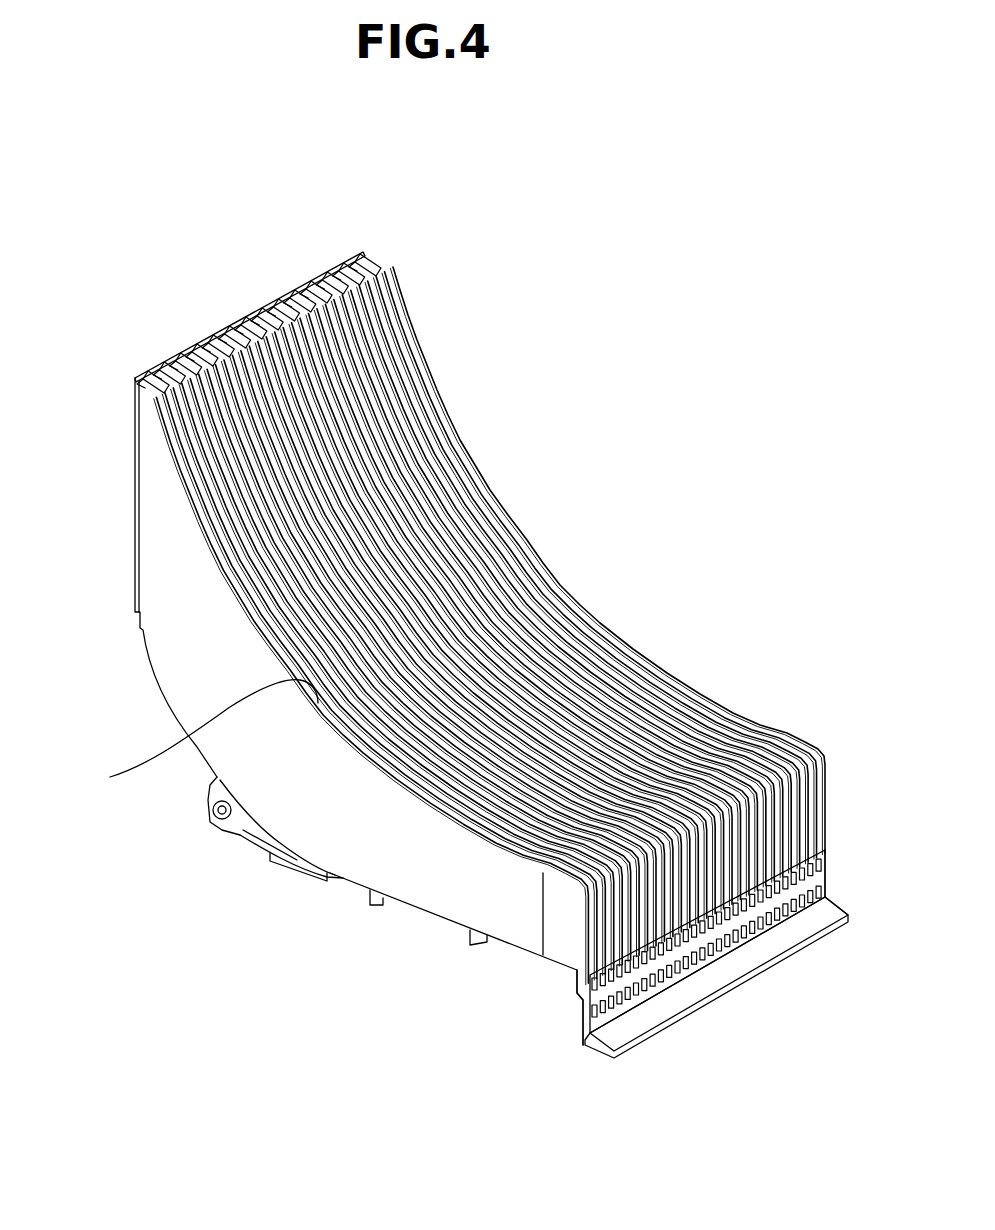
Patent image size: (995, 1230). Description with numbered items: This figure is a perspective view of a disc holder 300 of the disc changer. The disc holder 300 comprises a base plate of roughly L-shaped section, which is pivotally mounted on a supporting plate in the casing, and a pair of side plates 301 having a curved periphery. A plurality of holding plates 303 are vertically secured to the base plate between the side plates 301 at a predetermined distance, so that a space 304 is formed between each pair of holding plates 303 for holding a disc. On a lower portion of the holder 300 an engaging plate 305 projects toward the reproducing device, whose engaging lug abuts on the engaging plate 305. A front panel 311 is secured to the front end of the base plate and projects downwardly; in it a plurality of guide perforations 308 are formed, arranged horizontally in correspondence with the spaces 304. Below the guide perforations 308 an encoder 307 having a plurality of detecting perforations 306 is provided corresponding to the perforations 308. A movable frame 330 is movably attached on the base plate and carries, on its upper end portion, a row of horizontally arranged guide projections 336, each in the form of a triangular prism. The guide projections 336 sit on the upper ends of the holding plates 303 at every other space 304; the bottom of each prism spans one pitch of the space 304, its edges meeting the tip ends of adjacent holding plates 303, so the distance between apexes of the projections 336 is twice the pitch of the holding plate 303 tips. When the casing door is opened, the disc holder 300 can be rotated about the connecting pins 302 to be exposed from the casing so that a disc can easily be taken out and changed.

The disc holder 300 is at (516, 473).
The side plate 301 is at (195, 737).
The connecting pin 302 is at (210, 812).
The holding plate 303 is at (717, 762).
The space 304 is at (575, 640).
The engaging plate 305 is at (655, 1017).
The detecting perforation 306 is at (743, 946).
The encoder 307 is at (831, 889).
The guide perforation 308 is at (822, 878).
The front panel 311 is at (597, 1003).
The movable frame 330 is at (133, 531).
The guide projection 336 is at (372, 246).